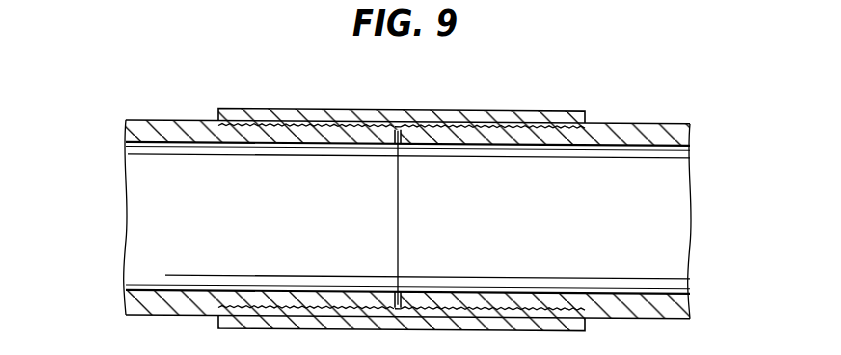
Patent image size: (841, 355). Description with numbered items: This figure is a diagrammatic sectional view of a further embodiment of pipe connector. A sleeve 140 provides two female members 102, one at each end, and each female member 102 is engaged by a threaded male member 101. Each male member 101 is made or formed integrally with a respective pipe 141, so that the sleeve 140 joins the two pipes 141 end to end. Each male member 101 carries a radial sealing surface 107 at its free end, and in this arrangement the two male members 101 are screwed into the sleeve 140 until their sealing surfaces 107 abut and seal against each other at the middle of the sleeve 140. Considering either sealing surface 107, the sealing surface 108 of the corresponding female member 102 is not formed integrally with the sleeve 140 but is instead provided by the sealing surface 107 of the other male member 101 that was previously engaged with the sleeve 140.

The male member 101 is at (172, 128).
The female member 102 is at (240, 115).
The sleeve 140 is at (400, 112).
The radial sealing surface 107 is at (400, 133).
The sealing surface of the female member 108 is at (400, 303).
The pipe 141 is at (140, 222).